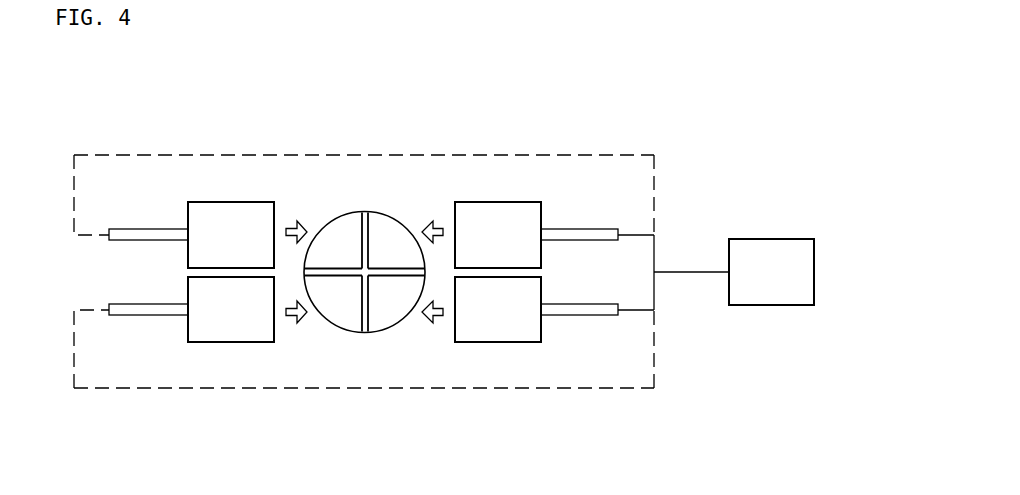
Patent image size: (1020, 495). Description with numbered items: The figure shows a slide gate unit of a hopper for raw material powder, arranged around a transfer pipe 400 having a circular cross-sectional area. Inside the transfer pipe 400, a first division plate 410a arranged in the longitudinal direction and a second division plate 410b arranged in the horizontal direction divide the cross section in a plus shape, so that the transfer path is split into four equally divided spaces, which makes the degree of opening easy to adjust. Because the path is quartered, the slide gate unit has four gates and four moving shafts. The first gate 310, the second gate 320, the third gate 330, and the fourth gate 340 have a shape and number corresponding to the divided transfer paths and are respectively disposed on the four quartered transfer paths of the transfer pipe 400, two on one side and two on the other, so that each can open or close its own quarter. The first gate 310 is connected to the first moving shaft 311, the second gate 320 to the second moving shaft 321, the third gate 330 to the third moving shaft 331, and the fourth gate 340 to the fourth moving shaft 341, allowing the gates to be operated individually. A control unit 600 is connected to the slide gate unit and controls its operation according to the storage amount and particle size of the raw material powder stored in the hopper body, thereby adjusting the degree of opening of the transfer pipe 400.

The first gate 310 is at (232, 202).
The first moving shaft 311 is at (143, 235).
The second gate 320 is at (232, 342).
The second moving shaft 321 is at (143, 310).
The third gate 330 is at (497, 202).
The third moving shaft 331 is at (585, 235).
The fourth gate 340 is at (497, 342).
The fourth moving shaft 341 is at (585, 310).
The transfer pipe 400 is at (392, 327).
The first division plate 410a is at (367, 232).
The second division plate 410b is at (333, 272).
The control unit 600 is at (773, 239).